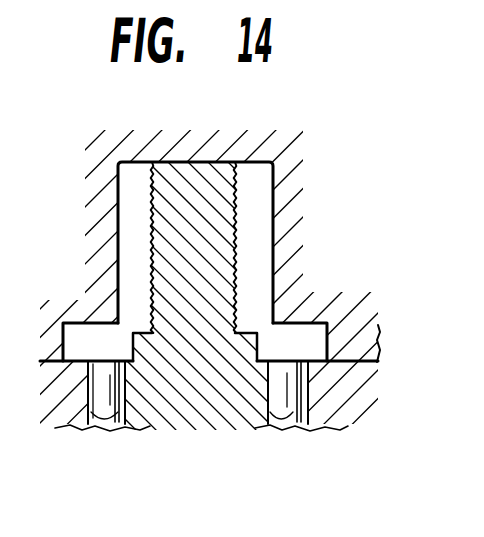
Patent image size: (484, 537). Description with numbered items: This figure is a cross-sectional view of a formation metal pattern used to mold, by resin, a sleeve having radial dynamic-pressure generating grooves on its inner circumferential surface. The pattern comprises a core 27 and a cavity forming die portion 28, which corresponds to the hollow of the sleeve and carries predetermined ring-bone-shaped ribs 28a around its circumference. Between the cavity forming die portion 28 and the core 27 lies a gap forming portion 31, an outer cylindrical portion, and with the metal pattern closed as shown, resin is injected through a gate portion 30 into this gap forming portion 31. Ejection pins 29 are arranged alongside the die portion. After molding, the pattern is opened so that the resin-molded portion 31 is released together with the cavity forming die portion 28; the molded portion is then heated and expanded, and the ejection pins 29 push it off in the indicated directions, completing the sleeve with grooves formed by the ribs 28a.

The core 27 is at (280, 143).
The cavity forming die portion 28 is at (205, 428).
The ring-bone-shaped ribs 28a is at (150, 293).
The ejection pins 29 is at (118, 418).
The gate portion 30 is at (378, 345).
The gap forming portion 31 is at (252, 241).